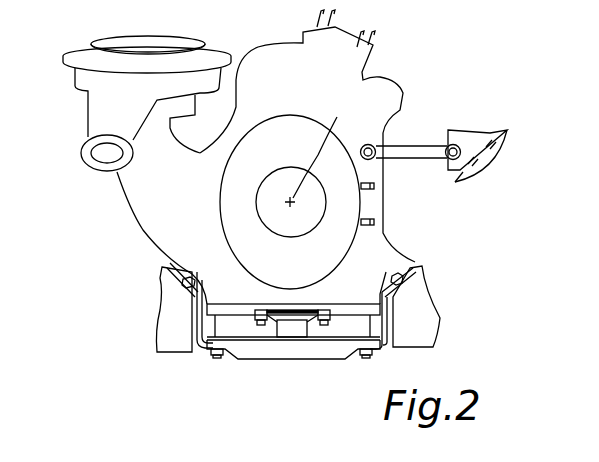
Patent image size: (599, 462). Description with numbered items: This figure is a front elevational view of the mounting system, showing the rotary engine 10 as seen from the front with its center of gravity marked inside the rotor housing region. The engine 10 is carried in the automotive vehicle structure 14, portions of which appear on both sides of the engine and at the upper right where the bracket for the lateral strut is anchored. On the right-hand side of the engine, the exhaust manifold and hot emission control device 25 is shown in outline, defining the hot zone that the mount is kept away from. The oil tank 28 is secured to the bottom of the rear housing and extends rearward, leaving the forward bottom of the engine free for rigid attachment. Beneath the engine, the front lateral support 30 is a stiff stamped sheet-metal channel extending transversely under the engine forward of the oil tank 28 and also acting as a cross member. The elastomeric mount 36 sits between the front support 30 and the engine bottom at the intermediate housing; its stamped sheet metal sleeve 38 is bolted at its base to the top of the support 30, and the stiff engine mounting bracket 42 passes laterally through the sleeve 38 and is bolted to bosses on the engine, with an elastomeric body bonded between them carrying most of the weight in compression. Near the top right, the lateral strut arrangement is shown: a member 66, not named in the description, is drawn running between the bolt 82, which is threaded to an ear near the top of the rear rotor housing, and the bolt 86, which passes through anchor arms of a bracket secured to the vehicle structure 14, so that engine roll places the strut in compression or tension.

The rotary engine 10 is at (386, 217).
The automotive vehicle structure 14 is at (168, 313).
The exhaust manifold and hot emission control device 25 is at (147, 197).
The oil tank 28 is at (228, 327).
The front lateral support 30 is at (313, 348).
The elastomeric mount 36 is at (288, 335).
The stamped sheet metal sleeve 38 is at (296, 324).
The engine mounting bracket 42 is at (272, 310).
The link 66 is at (417, 144).
The bolt 82 is at (378, 160).
The bolt 86 is at (458, 146).